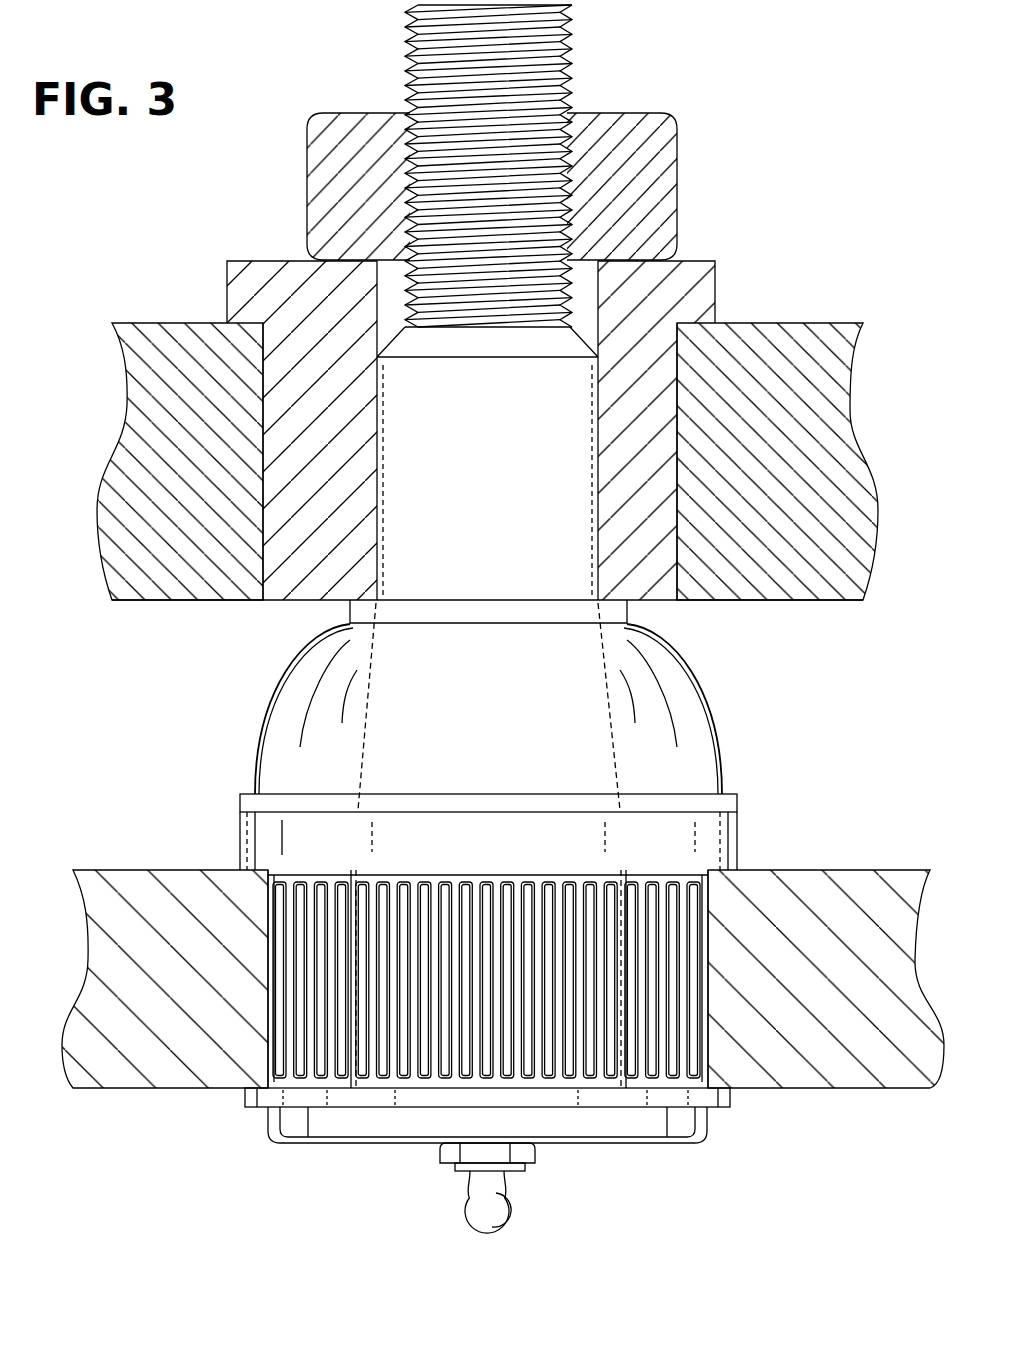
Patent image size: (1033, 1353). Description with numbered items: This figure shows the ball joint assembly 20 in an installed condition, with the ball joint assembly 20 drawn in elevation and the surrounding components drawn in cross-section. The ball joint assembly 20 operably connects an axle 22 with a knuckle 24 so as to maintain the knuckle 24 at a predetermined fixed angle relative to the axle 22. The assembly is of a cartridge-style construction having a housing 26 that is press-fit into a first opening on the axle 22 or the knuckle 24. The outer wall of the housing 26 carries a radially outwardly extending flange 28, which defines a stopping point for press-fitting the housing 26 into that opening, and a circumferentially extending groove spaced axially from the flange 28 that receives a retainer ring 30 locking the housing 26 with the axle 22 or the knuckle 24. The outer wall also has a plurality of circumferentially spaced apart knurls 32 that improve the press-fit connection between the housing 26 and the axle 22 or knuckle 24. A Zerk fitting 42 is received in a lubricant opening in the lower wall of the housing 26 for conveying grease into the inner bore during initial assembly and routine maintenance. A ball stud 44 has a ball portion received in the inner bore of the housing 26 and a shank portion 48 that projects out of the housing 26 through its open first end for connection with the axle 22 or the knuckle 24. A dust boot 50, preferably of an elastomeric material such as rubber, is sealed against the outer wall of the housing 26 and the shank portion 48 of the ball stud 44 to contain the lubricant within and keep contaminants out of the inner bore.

The ball joint assembly 20 is at (256, 1174).
The axle 22 is at (773, 357).
The knuckle 24 is at (828, 907).
The housing 26 is at (663, 1163).
The radially outwardly extending flange 28 is at (715, 835).
The retainer ring 30 is at (722, 1100).
The knurls 32 is at (275, 973).
The Zerk fitting 42 is at (488, 1217).
The ball stud 44 is at (613, 78).
The shank portion 48 is at (502, 458).
The dust boot 50 is at (683, 688).